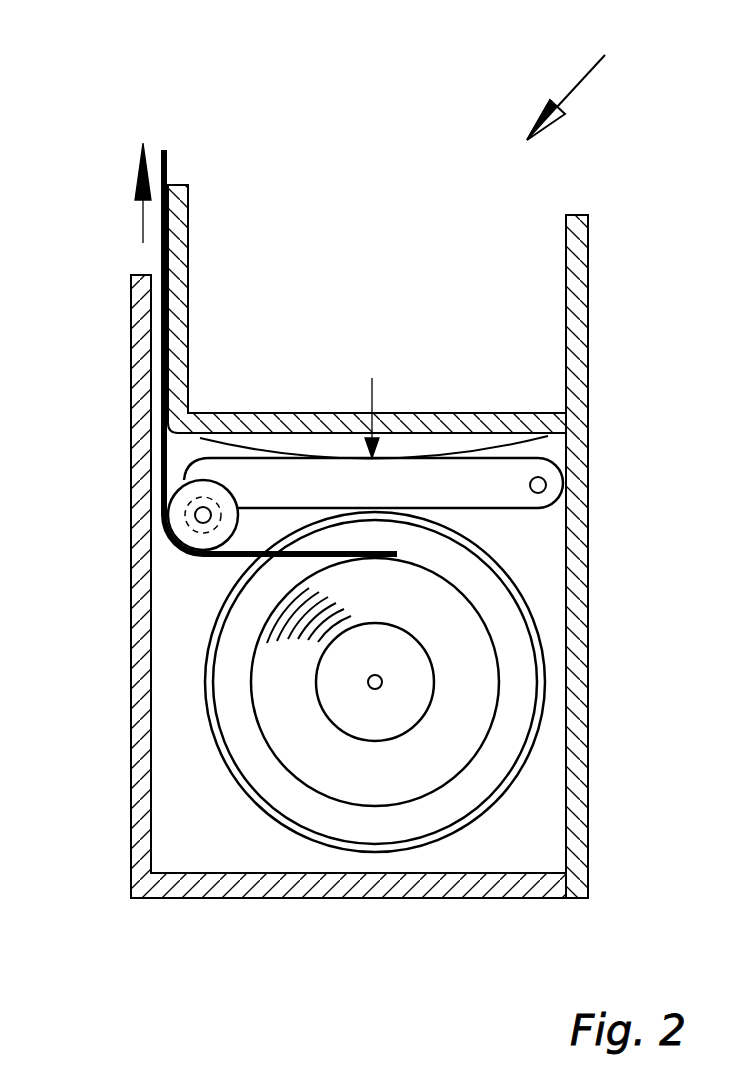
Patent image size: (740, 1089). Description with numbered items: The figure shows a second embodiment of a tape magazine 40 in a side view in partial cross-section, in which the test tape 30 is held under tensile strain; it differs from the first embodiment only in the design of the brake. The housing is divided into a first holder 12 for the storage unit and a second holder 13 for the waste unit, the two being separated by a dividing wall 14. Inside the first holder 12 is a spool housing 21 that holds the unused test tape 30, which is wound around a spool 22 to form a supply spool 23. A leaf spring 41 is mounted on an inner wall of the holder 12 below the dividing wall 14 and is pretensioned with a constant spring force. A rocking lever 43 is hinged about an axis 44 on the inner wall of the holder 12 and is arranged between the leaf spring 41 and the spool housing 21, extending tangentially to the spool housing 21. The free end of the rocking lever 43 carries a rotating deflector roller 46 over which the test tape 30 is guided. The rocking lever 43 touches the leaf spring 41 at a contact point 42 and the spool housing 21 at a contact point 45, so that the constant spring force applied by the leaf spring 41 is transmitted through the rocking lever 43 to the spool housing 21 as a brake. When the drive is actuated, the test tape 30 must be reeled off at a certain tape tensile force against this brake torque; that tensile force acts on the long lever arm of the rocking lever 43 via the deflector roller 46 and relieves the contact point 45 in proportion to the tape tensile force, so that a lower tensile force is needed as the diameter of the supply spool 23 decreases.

The first holder 12 is at (190, 797).
The second holder 13 is at (545, 268).
The dividing wall 14 is at (490, 412).
The spool housing 21 is at (510, 782).
The spool 22 is at (383, 683).
The supply spool 23 is at (443, 738).
The test tape 30 is at (160, 258).
The tape magazine 40 is at (590, 82).
The leaf spring 41 is at (287, 413).
The contact point 42 is at (550, 440).
The rocking lever 43 is at (500, 508).
The axis 44 is at (546, 485).
The contact point 45 is at (440, 522).
The deflector roller 46 is at (172, 527).